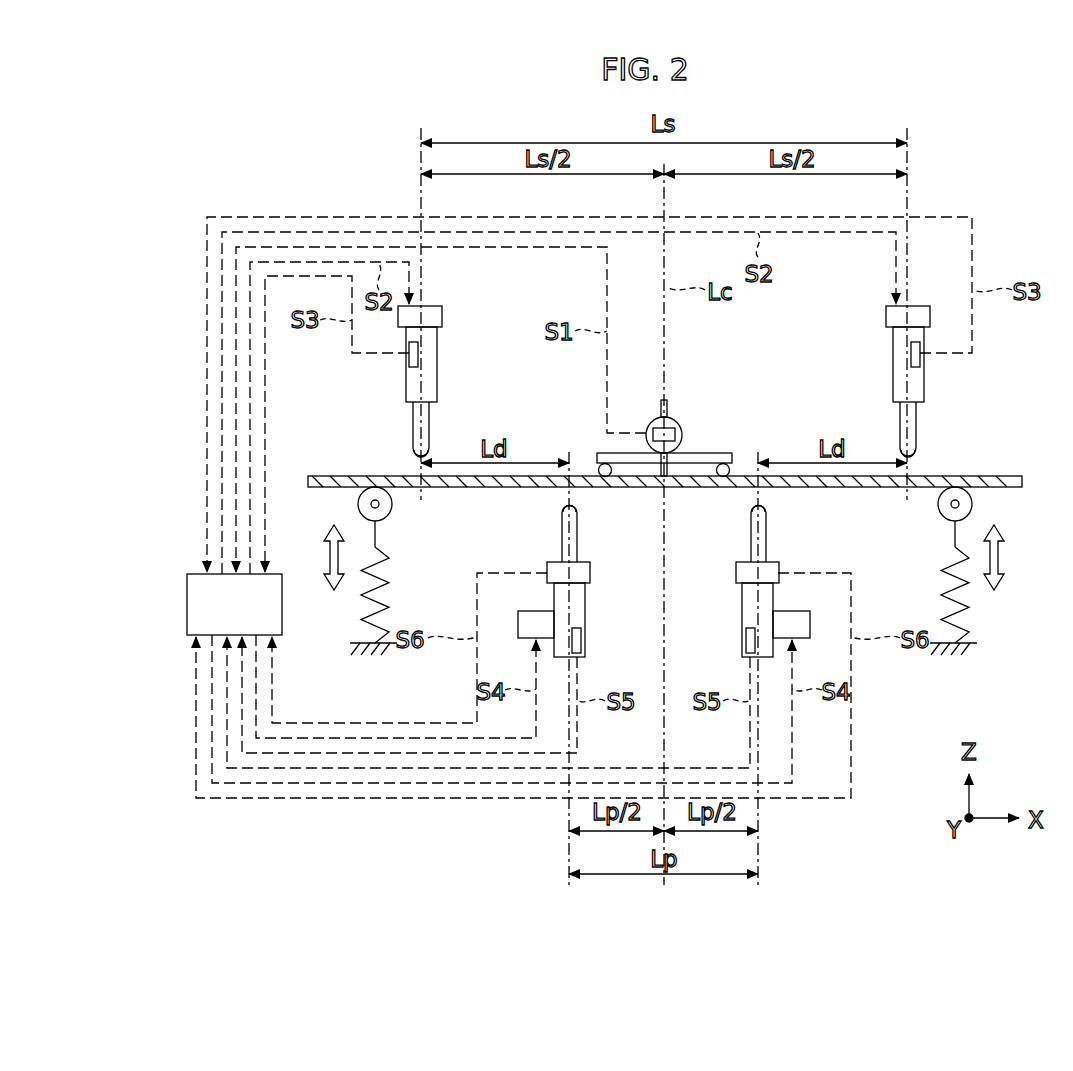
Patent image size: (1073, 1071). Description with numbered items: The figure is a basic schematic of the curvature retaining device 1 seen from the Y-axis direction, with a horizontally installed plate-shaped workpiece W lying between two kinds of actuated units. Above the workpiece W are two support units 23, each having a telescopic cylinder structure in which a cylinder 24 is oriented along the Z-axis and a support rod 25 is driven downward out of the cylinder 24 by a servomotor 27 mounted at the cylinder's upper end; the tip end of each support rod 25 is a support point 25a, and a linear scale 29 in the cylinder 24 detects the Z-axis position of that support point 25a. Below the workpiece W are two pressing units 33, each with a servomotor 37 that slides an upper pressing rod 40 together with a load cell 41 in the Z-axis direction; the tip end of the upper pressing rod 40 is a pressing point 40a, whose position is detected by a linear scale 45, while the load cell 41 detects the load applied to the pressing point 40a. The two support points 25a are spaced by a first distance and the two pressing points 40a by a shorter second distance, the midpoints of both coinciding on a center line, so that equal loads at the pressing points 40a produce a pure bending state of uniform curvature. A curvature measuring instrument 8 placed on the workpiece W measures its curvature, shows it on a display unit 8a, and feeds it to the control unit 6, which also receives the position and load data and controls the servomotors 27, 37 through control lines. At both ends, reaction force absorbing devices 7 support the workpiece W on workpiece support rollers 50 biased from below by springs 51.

The curvature retaining device 1 is at (183, 170).
The control unit 6 is at (222, 618).
The reaction force absorbing device 7 is at (668, 571).
The curvature measuring instrument 8 is at (667, 424).
The display unit 8a is at (674, 430).
The support unit 23 is at (664, 364).
The cylinder 24 is at (438, 372).
The support rod 25 is at (413, 421).
The support point 25a is at (418, 456).
The servomotor 27 is at (443, 313).
The linear scale 29 is at (409, 358).
The pressing unit 33 is at (592, 548).
The servomotor 37 is at (540, 610).
The upper pressing rod 40 is at (562, 536).
The pressing point 40a is at (565, 508).
The load cell 41 is at (590, 573).
The linear scale 45 is at (581, 641).
The workpiece support roller 50 is at (384, 519).
The spring 51 is at (389, 581).
The plate-shaped workpiece W is at (1010, 474).